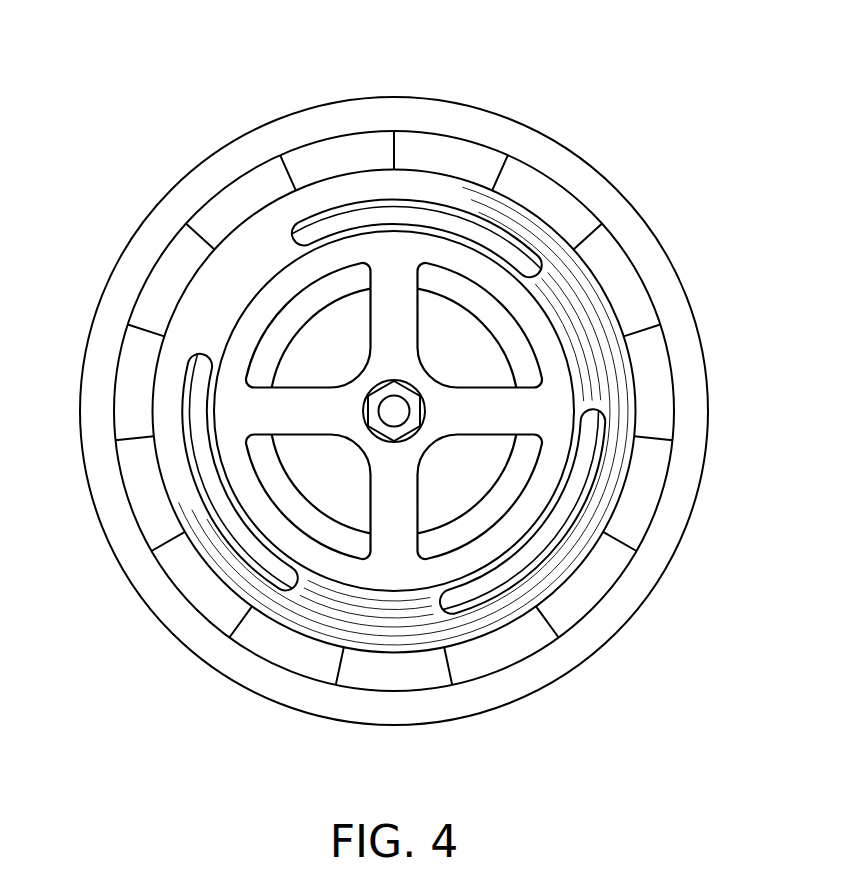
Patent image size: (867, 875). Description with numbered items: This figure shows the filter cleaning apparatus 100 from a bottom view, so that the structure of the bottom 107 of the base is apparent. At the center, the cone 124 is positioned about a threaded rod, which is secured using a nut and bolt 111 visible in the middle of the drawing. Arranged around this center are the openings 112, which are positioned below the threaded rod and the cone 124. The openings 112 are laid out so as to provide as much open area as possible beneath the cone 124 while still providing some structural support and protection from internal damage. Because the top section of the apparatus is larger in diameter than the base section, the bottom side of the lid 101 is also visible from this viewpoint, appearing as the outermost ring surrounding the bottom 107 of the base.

The filter cleaning apparatus 100 is at (156, 27).
The lid 101 is at (500, 690).
The bottom 107 is at (543, 323).
The nut and bolt 111 is at (393, 411).
The openings 112 is at (443, 285).
The cone 124 is at (483, 322).